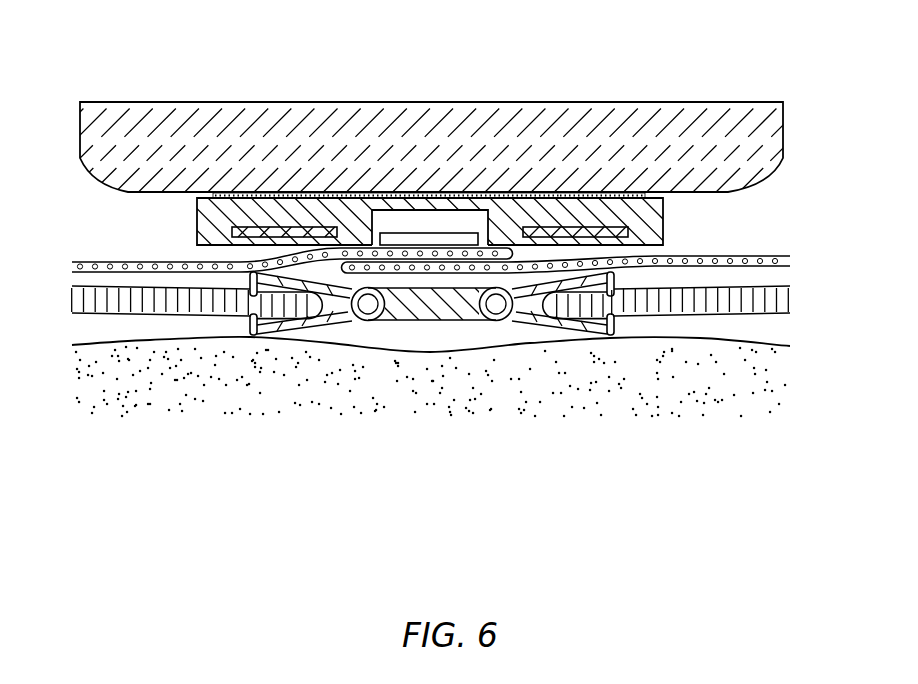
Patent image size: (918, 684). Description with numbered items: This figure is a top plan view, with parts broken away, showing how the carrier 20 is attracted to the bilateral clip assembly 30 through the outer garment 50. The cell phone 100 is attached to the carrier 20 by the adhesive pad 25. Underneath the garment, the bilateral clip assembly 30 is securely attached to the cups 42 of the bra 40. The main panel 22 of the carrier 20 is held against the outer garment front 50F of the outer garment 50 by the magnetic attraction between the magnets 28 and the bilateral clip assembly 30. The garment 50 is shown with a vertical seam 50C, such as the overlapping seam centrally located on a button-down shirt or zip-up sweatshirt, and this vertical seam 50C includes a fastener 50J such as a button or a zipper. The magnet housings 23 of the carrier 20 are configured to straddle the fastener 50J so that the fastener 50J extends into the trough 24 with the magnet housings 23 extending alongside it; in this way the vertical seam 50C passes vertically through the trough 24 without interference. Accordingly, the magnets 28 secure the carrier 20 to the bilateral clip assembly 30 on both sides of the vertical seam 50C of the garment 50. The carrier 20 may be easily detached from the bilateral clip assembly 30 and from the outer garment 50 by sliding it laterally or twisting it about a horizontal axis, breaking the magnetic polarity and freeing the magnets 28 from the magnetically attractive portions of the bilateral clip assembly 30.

The cell phone 100 is at (116, 102).
The carrier 20 is at (664, 221).
The main panel 22 is at (441, 245).
The magnet housings 23 is at (664, 208).
The trough 24 is at (382, 210).
The adhesive pad 25 is at (661, 193).
The magnets 28 is at (233, 228).
The bilateral clip assembly 30 is at (429, 321).
The bra 40 is at (160, 315).
The cups 42 is at (430, 376).
The outer garment 50 is at (87, 262).
The vertical seam 50C is at (458, 273).
The outer garment front 50F is at (458, 247).
The fastener 50J is at (457, 262).